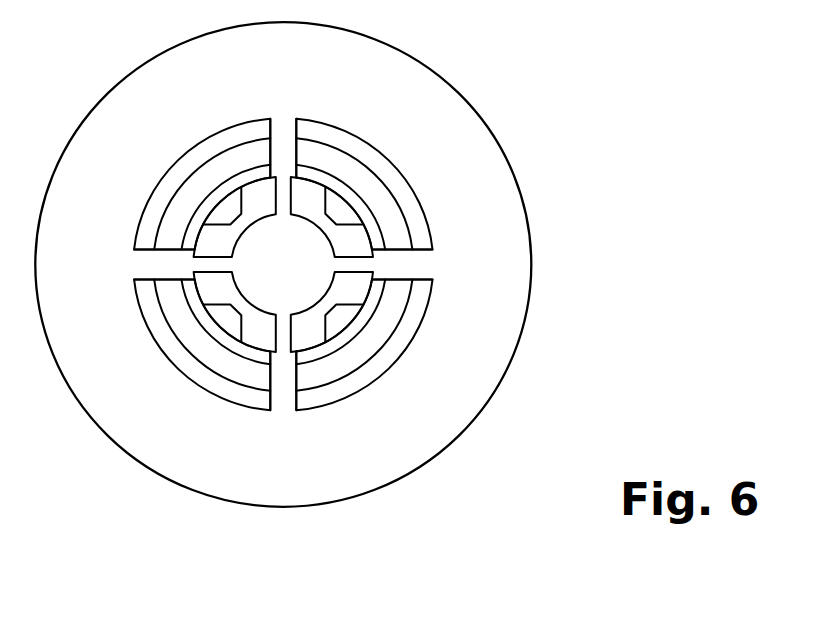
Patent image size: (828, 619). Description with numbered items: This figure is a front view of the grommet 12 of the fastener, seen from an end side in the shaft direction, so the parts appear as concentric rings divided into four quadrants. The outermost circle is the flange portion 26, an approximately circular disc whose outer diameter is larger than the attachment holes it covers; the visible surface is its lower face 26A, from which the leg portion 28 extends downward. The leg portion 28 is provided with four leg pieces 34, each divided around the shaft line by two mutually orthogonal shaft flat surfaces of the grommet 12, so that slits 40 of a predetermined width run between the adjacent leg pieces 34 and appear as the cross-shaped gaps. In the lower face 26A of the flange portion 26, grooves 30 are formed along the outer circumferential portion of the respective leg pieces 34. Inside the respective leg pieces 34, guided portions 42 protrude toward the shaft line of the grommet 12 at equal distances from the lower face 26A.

The grommet 12 is at (478, 74).
The flange portion 26 is at (496, 139).
The lower face of the flange portion 26A is at (497, 192).
The leg portion 28 is at (353, 171).
The grooves 30 is at (232, 120).
The leg pieces 34 is at (230, 168).
The slits 40 is at (292, 265).
The guided portions 42 is at (283, 232).